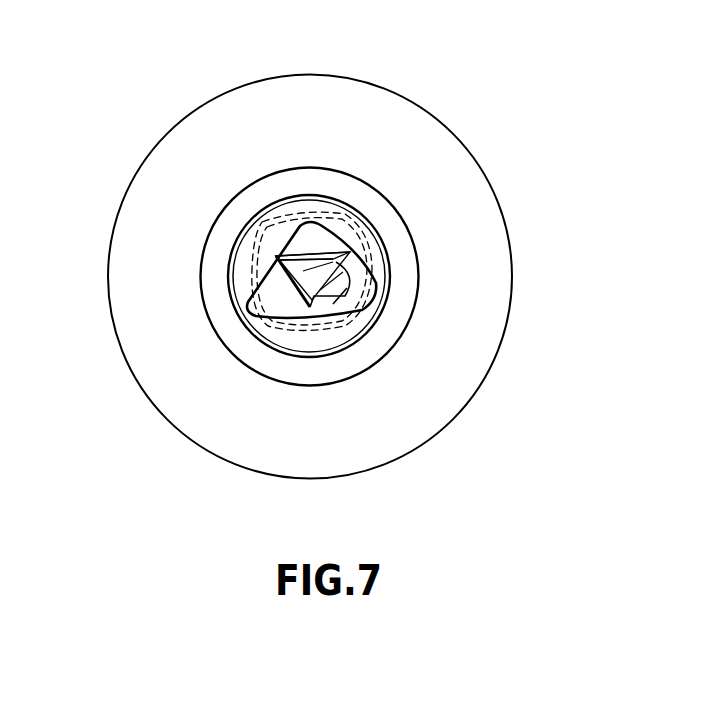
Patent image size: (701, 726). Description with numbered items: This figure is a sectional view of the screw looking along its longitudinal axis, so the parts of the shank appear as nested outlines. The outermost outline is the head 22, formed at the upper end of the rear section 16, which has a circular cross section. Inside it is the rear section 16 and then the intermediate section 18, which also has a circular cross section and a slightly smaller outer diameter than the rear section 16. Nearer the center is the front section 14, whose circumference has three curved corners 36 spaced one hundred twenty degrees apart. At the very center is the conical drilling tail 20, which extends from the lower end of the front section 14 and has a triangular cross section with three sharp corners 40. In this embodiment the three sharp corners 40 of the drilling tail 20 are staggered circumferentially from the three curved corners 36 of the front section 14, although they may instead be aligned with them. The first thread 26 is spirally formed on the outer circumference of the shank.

The front section 14 is at (276, 256).
The rear section 16 is at (262, 247).
The intermediate section 18 is at (348, 225).
The drilling tail 20 is at (350, 253).
The head 22 is at (500, 293).
The first thread 26 is at (348, 291).
The curved corners 36 is at (300, 215).
The sharp corners 40 is at (345, 291).